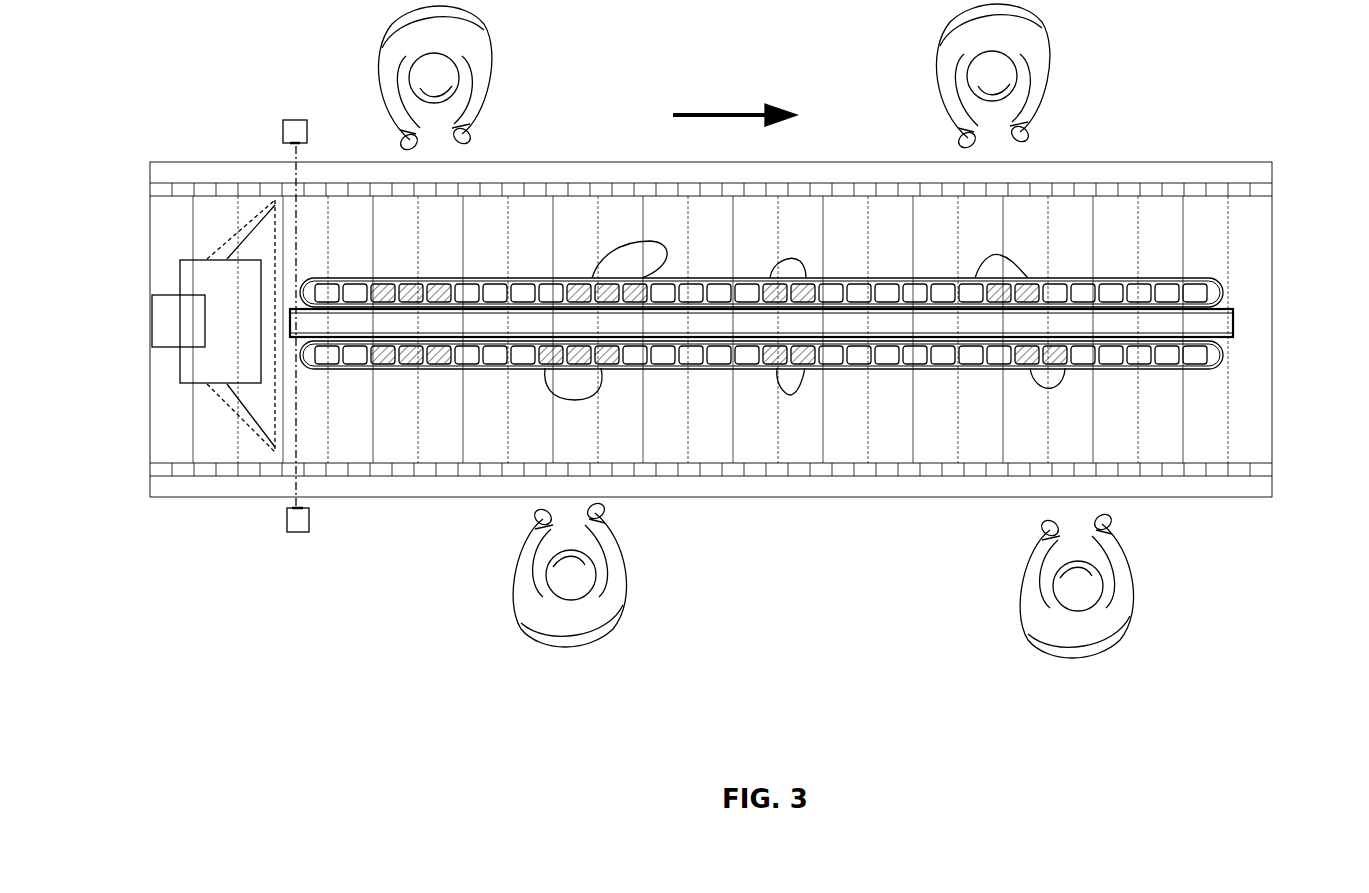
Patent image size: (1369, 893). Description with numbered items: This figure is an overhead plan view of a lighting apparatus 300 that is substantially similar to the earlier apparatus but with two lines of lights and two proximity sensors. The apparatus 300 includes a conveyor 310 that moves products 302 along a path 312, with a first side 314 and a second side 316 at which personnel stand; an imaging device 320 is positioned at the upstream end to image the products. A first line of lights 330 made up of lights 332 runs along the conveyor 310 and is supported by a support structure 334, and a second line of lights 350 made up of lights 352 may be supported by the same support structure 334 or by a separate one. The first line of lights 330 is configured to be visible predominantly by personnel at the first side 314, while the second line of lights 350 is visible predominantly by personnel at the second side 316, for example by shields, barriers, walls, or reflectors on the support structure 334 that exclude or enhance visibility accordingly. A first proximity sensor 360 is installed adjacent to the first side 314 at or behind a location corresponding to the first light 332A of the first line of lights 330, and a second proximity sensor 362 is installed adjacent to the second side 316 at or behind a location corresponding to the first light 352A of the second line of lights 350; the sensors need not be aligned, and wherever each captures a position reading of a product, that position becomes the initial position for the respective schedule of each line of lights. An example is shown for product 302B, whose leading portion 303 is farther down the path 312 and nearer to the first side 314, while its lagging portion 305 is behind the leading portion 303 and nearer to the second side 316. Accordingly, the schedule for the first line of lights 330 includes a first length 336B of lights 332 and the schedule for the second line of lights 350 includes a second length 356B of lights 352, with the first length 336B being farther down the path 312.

The lighting apparatus 300 is at (1237, 77).
The conveyor 310 is at (252, 143).
The path 312 is at (708, 115).
The first side 314 is at (777, 498).
The second side 316 is at (828, 163).
The imaging device 320 is at (162, 360).
The first line of lights 330 is at (1235, 350).
The lights 332 is at (1198, 358).
The first light 332A is at (325, 368).
The support structure 334 is at (1233, 320).
The first length 336B is at (1070, 388).
The second line of lights 350 is at (1235, 290).
The lights 352 is at (1203, 292).
The first light 352A is at (320, 280).
The second length 356B is at (1040, 246).
The first proximity sensor 360 is at (287, 520).
The second proximity sensor 362 is at (307, 130).
The products 302 is at (630, 243).
The product 302B is at (1033, 278).
The leading portion 303 is at (1065, 372).
The lagging portion 305 is at (975, 267).